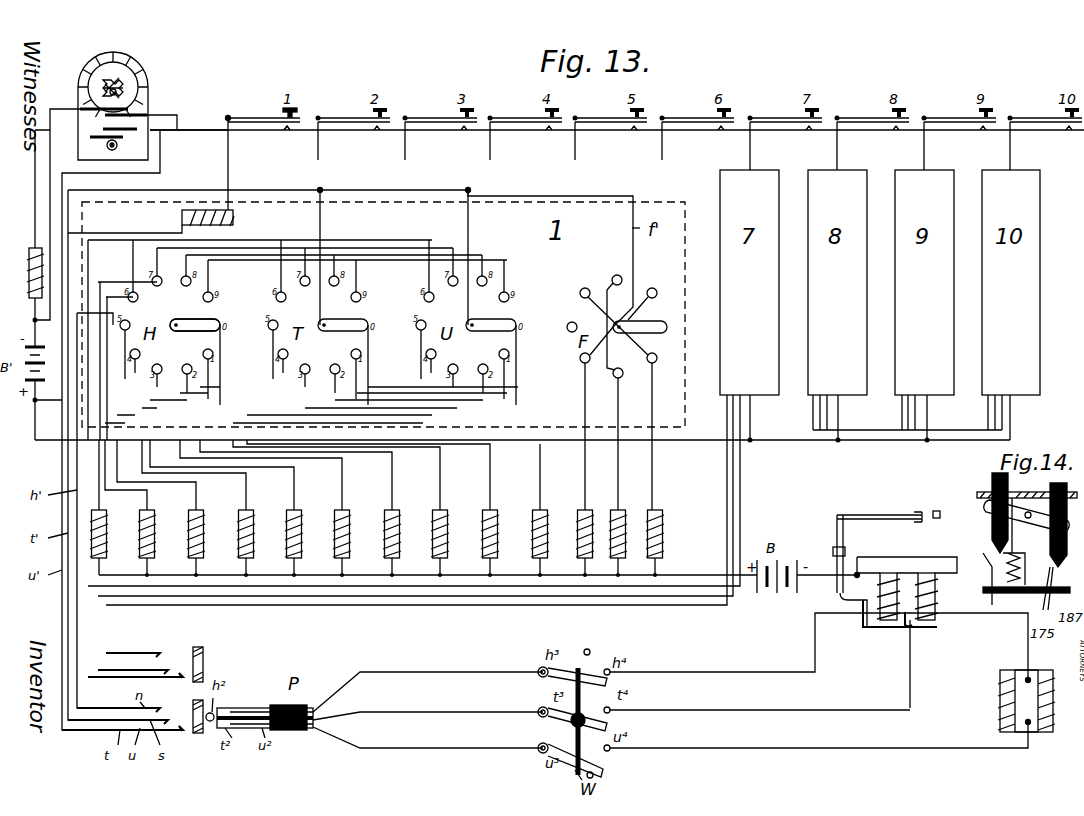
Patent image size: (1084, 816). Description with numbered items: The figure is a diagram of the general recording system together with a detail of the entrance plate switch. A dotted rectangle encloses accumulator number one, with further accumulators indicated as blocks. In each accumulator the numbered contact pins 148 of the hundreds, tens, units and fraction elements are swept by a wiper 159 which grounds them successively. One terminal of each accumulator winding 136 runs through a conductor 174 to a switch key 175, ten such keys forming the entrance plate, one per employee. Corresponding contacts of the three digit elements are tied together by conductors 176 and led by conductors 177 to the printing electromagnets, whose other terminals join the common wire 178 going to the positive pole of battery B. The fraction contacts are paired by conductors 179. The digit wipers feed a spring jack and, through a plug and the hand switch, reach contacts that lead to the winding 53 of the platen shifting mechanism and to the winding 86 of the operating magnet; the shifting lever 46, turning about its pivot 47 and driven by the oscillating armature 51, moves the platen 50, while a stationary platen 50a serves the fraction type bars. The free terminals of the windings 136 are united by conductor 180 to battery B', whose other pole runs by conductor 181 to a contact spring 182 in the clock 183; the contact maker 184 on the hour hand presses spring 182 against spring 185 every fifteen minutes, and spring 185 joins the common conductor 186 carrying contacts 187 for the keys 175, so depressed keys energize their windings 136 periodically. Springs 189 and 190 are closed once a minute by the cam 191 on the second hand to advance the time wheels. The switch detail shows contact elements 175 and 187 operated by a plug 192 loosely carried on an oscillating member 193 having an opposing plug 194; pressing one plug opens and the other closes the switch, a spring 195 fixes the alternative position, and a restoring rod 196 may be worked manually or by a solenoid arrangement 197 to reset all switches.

In FIG. 13, the accumulator winding 136 is at (234, 224).
In FIG. 13, the contact pins 148 is at (392, 322).
In FIG. 13, the wiper 159 is at (417, 327).
In FIG. 13, the conductor 174 is at (232, 152).
In FIG. 13, the switch key 175 is at (263, 113).
In FIG. 13, the conductors 176 is at (292, 315).
In FIG. 13, the conductors 177 is at (420, 485).
In FIG. 13, the common wire 178 is at (365, 580).
In FIG. 13, the conductors 179 is at (592, 382).
In FIG. 13, the conductor 180 is at (506, 440).
In FIG. 13, the conductor 181 is at (35, 215).
In FIG. 13, the contact spring 182 is at (88, 96).
In FIG. 13, the clock 183 is at (113, 99).
In FIG. 13, the contact maker 184 is at (122, 88).
In FIG. 13, the spring 185 is at (150, 115).
In FIG. 13, the common conductor 186 is at (189, 141).
In FIG. 13, the contacts 187 is at (423, 143).
In FIG. 13, the spring 189 is at (92, 140).
In FIG. 13, the spring 190 is at (140, 132).
In FIG. 13, the cam 191 is at (108, 148).
In FIG. 13, the opposing plug 194 is at (29, 268).
In FIG. 14, the opposing plug 194 is at (992, 487).
In FIG. 14, the plug 192 is at (1065, 485).
In FIG. 14, the oscillating member 193 is at (990, 508).
In FIG. 14, the spring 195 is at (1007, 568).
In FIG. 14, the restoring rod 196 is at (966, 573).
In FIG. 14, the solenoid arrangement 197 is at (1046, 562).
In FIG. 13, the shifting lever 46 is at (838, 535).
In FIG. 13, the pivot 47 is at (837, 593).
In FIG. 13, the platen 50 is at (922, 516).
In FIG. 13, the stationary platen 50a is at (948, 506).
In FIG. 13, the oscillating armature 51 is at (885, 625).
In FIG. 13, the electromagnet 53 is at (897, 560).
In FIG. 13, the winding 86 is at (1053, 730).